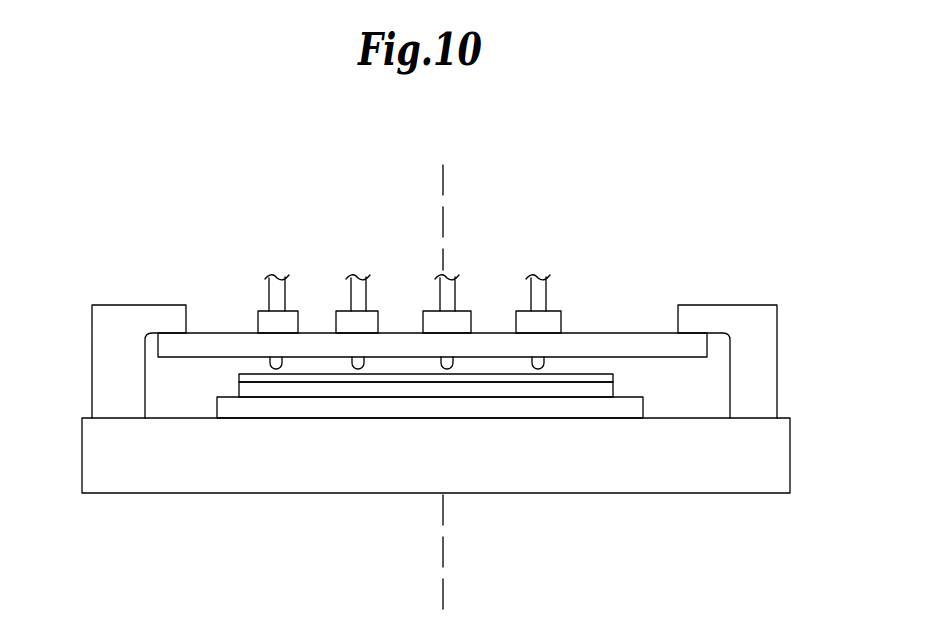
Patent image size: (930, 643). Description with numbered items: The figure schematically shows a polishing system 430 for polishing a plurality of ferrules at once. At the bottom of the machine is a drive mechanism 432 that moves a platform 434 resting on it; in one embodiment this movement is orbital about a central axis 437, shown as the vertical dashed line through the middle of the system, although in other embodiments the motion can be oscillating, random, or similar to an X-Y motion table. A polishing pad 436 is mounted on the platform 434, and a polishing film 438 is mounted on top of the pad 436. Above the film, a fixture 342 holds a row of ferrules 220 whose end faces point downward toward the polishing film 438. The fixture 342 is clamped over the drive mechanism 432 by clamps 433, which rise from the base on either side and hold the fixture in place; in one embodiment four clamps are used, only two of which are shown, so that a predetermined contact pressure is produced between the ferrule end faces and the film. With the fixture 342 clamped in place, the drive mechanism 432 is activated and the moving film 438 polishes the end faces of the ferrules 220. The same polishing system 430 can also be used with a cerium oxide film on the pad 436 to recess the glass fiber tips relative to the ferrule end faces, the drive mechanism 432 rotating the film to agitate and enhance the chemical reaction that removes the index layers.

The polishing system 430 is at (632, 221).
The central axis 437 is at (445, 228).
The drive mechanism 432 is at (82, 465).
The clamps 433 is at (92, 357).
The fixture 342 is at (615, 335).
The ferrules 220 is at (266, 362).
The platform 434 is at (217, 398).
The polishing pad 436 is at (237, 386).
The polishing film 438 is at (613, 378).